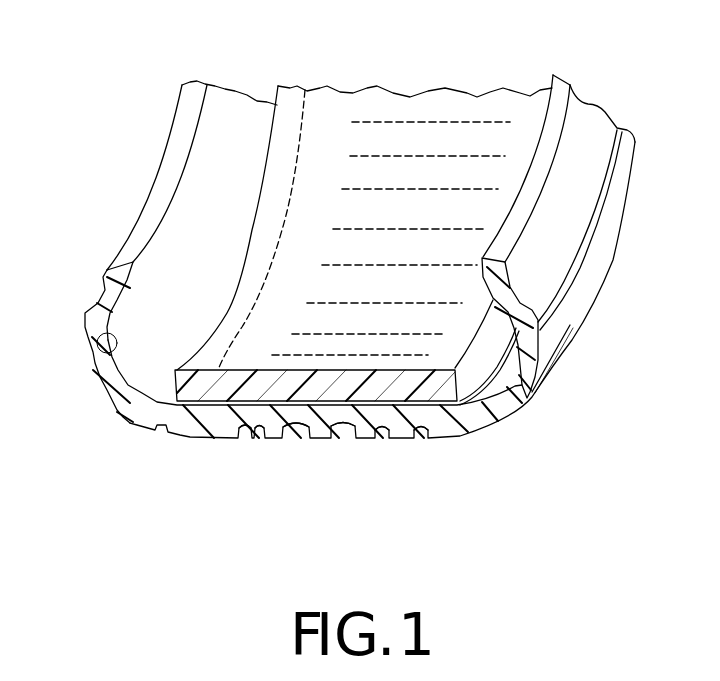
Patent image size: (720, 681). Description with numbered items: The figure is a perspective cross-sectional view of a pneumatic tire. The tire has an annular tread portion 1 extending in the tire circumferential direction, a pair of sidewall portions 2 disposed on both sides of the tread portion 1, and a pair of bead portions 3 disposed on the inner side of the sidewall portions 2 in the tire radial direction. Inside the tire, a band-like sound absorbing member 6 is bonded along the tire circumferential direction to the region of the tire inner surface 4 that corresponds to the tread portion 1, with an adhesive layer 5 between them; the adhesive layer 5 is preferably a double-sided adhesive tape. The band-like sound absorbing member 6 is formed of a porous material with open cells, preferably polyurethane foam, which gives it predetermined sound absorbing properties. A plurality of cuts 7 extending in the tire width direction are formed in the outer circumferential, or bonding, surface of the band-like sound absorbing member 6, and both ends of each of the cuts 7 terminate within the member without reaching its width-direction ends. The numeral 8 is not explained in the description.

The tread portion 1 is at (443, 432).
The sidewall portions 2 is at (90, 370).
The bead portions 3 is at (103, 286).
The tire inner surface 4 is at (97, 341).
The adhesive layer 5 is at (318, 407).
The band-like sound absorbing member 6 is at (339, 133).
The cuts 7 is at (422, 122).
The tire inner surface 8 is at (197, 245).